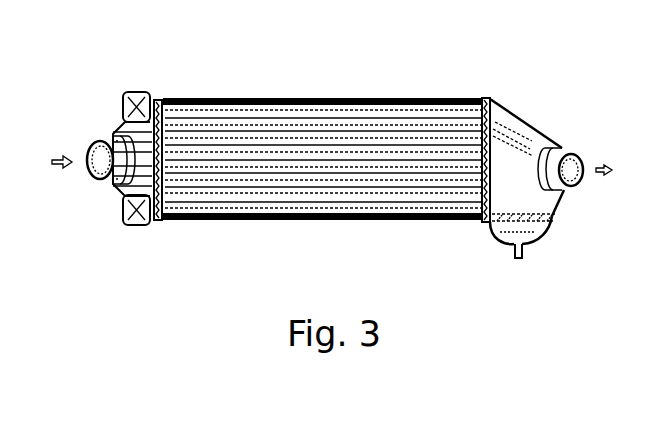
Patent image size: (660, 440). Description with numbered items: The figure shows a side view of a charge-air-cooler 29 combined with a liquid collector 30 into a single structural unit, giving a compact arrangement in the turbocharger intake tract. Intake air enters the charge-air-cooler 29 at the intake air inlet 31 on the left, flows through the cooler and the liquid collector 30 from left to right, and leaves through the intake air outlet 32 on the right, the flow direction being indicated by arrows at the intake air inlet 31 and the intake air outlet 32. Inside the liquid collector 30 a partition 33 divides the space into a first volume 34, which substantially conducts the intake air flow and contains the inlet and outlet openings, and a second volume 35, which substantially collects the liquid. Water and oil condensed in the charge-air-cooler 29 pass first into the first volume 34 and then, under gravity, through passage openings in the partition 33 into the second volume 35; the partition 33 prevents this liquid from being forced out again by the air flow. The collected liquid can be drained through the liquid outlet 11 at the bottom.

The charge-air-cooler 29 is at (223, 105).
The liquid collector 30 is at (513, 108).
The intake air inlet 31 is at (83, 167).
The intake air outlet 32 is at (578, 150).
The partition 33 is at (554, 218).
The first volume 34 is at (523, 172).
The second volume 35 is at (537, 238).
The liquid outlet 11 is at (508, 248).